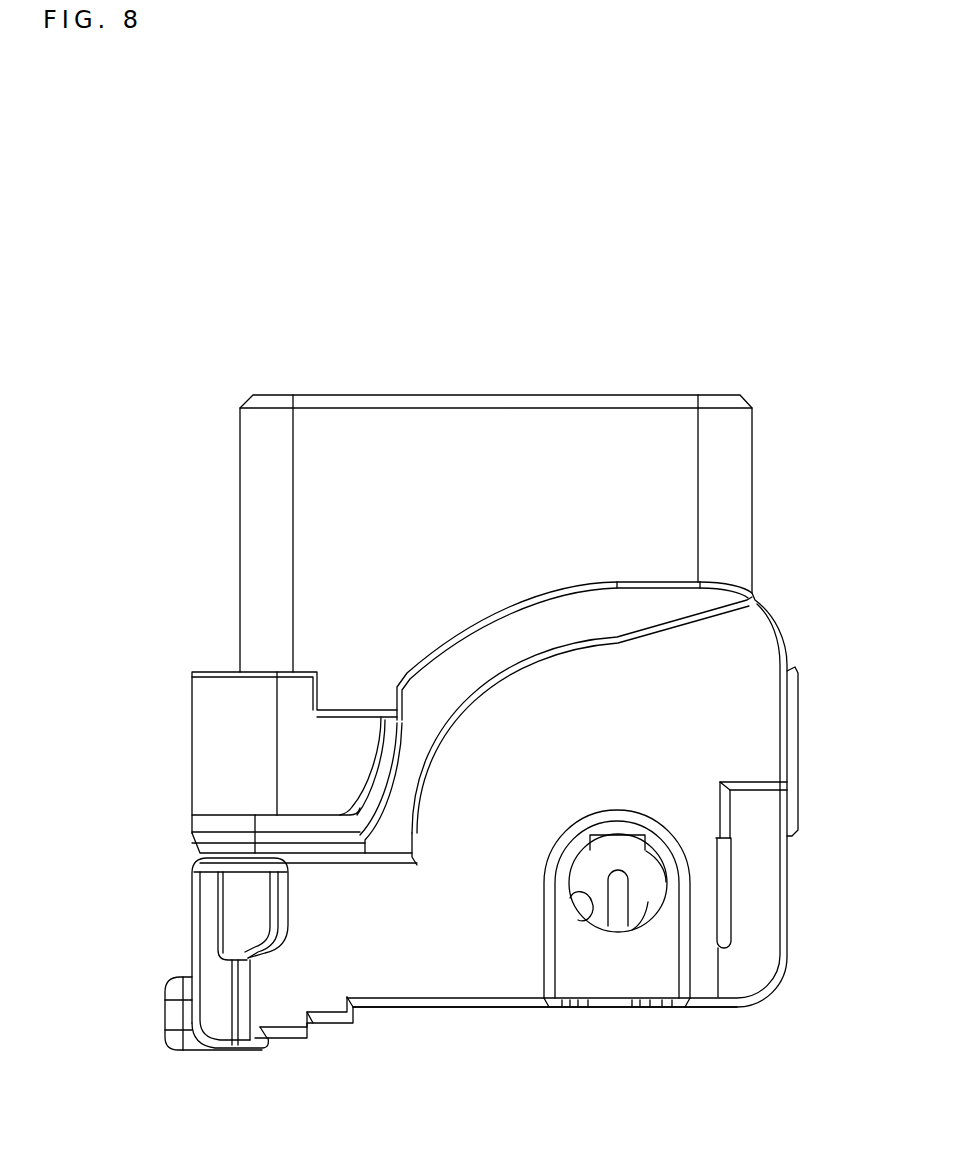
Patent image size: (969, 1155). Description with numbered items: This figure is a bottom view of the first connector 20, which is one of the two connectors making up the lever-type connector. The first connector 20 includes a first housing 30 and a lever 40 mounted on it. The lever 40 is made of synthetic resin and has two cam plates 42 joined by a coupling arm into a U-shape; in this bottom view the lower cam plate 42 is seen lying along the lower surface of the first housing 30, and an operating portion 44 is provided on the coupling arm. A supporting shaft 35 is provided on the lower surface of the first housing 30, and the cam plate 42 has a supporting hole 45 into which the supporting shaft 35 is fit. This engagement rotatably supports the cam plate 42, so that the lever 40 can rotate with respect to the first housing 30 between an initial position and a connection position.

The first connector 20 is at (433, 252).
The first housing 30 is at (494, 385).
The lever 40 is at (463, 605).
The cam plate 42 is at (750, 635).
The supporting shaft 35 is at (647, 900).
The supporting hole 45 is at (597, 925).
The operating portion 44 is at (280, 1010).